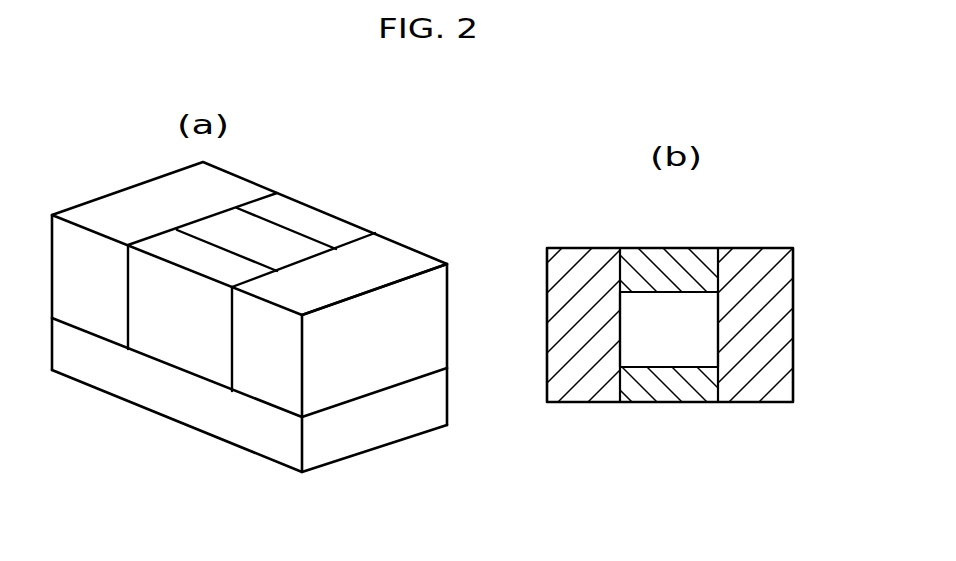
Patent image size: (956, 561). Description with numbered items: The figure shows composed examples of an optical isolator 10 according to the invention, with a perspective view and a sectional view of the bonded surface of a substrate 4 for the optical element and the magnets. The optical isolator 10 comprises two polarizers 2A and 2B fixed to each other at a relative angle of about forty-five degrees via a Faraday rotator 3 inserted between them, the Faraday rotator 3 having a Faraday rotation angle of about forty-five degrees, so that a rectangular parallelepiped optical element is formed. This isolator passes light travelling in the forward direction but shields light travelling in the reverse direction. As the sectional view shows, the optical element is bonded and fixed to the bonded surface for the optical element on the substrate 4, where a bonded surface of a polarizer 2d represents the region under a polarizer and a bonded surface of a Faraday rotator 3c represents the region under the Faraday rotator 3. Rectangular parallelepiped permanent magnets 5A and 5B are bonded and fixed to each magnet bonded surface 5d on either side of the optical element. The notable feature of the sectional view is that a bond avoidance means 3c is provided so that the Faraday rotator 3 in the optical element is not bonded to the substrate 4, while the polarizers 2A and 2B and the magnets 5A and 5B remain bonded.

The optical isolator 10 is at (330, 176).
The polarizer 2A is at (170, 333).
The polarizer 2B is at (293, 215).
The Faraday rotator 3 is at (278, 247).
The substrate 4 is at (233, 425).
The permanent magnet 5A is at (120, 217).
The permanent magnet 5B is at (383, 263).
The magnet bonded surface 5d is at (580, 267).
The bonded surface of a polarizer 2d is at (663, 265).
The bonded surface of a Faraday rotator 3c is at (673, 320).